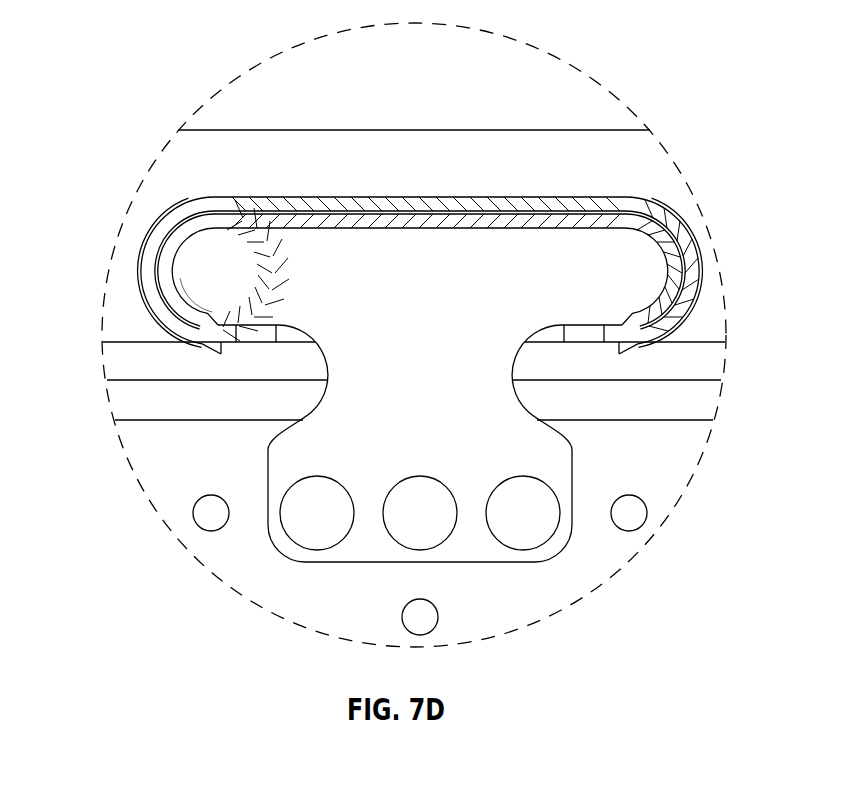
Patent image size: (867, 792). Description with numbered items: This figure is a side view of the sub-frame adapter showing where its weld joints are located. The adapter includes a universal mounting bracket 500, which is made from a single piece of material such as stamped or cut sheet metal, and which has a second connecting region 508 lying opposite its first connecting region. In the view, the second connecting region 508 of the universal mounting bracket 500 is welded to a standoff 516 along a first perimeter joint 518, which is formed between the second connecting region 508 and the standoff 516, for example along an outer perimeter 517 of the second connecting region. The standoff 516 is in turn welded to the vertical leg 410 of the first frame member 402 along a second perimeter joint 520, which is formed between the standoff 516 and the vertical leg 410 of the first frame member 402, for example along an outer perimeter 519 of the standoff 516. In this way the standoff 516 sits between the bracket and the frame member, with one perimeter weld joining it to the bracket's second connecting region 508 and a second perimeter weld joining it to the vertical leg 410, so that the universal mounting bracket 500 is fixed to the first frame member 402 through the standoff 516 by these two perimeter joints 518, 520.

The first frame member 402 is at (624, 168).
The vertical leg 410 is at (376, 150).
The universal mounting bracket 500 is at (374, 358).
The second connecting region 508 is at (210, 275).
The standoff 516 is at (578, 332).
The outer perimeter of the second connecting region 517 is at (560, 325).
The first perimeter joint 518 is at (298, 201).
The outer perimeter of the standoff 519 is at (276, 340).
The second perimeter joint 520 is at (154, 243).